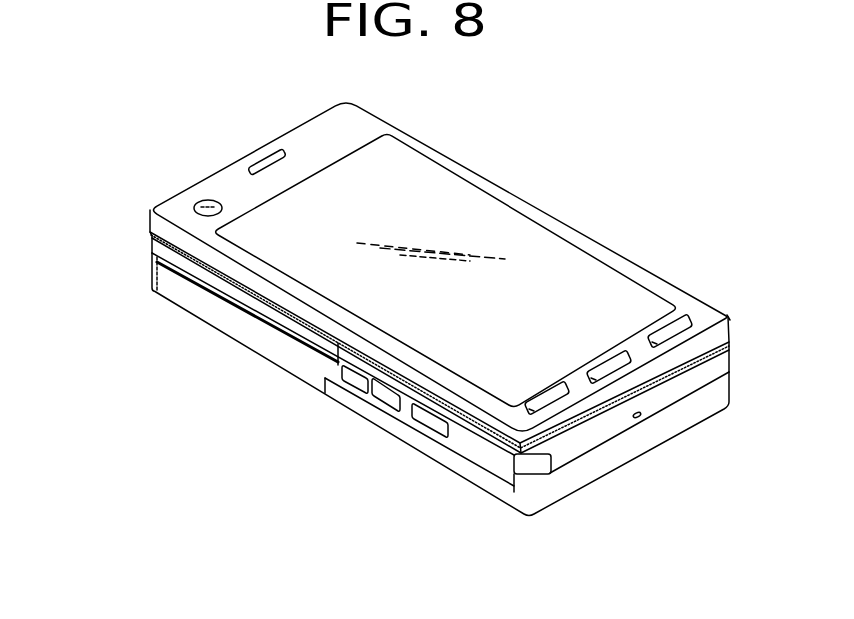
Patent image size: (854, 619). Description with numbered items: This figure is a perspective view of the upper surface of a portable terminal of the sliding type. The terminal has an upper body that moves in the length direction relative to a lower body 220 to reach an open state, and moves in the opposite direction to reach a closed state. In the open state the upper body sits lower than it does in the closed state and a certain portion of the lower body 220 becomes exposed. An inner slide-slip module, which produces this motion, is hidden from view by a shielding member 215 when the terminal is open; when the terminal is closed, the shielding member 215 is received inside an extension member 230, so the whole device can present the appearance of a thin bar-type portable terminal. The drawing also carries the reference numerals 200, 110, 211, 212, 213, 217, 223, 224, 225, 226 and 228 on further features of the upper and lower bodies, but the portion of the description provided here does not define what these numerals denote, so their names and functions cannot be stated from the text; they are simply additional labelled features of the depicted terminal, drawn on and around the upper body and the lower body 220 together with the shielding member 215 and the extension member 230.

The mobile terminal 200 is at (587, 187).
The first body 110 is at (702, 298).
The display 211 is at (450, 212).
The speaker 212 is at (267, 158).
The camera 213 is at (210, 198).
The shielding member 215 is at (167, 250).
The corner of first body 217 is at (729, 318).
The lower body 220 is at (227, 338).
The side keys 223 is at (360, 380).
The side key 224 is at (433, 423).
The corner portion 225 is at (538, 470).
The side panel 226 is at (477, 473).
The microphone hole 228 is at (640, 418).
The extension member 230 is at (152, 276).